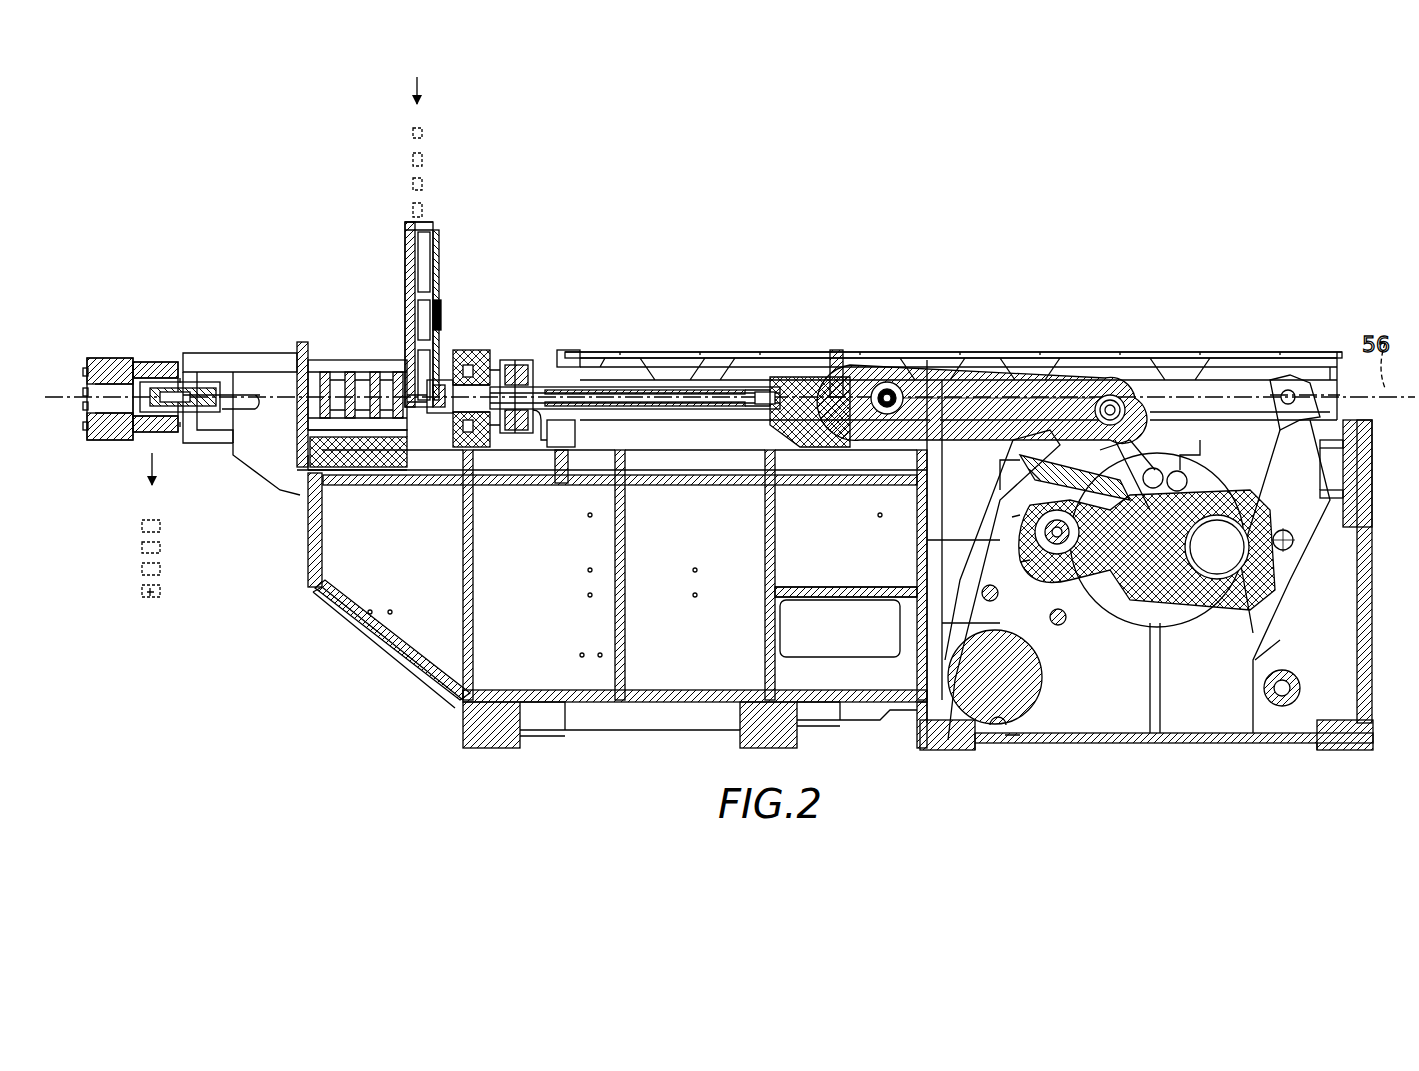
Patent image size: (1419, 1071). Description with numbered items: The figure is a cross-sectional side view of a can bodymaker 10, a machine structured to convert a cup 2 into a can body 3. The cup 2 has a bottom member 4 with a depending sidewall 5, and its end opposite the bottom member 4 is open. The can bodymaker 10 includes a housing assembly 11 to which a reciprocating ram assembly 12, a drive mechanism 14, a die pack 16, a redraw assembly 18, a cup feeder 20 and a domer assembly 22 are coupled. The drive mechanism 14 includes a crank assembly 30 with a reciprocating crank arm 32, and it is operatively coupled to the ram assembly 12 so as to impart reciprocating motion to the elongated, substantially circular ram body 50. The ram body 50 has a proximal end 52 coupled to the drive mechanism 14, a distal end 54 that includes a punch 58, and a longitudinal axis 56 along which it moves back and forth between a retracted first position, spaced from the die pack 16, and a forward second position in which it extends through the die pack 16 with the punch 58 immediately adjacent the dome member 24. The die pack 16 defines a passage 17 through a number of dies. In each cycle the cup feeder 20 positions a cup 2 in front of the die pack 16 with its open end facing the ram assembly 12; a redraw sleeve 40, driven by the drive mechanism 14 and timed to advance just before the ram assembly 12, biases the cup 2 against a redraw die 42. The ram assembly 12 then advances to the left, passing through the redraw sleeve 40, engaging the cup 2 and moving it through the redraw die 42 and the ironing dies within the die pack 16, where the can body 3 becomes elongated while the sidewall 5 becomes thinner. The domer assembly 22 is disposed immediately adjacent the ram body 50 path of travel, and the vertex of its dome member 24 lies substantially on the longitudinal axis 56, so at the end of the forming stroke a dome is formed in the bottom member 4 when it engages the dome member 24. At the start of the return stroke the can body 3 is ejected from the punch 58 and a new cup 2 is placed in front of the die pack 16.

The cup 2 is at (428, 154).
The can body 3 is at (133, 504).
The bottom member 4 is at (142, 590).
The sidewall 5 is at (158, 594).
The can bodymaker 10 is at (754, 270).
The housing assembly 11 is at (985, 733).
The reciprocating ram assembly 12 is at (520, 376).
The drive mechanism 14 is at (1088, 308).
The die pack 16 is at (353, 364).
The passage 17 is at (298, 346).
The redraw assembly 18 is at (393, 493).
The cup feeder 20 is at (408, 242).
The domer assembly 22 is at (156, 350).
The dome member 24 is at (94, 420).
The crank assembly 30 is at (971, 321).
The crank arm 32 is at (1003, 366).
The redraw sleeve 40 is at (443, 381).
The redraw die 42 is at (383, 338).
The ram body 50 is at (528, 379).
The proximal end 52 is at (771, 371).
The distal end 54 is at (554, 446).
The longitudinal axis 56 is at (84, 397).
The punch 58 is at (476, 363).